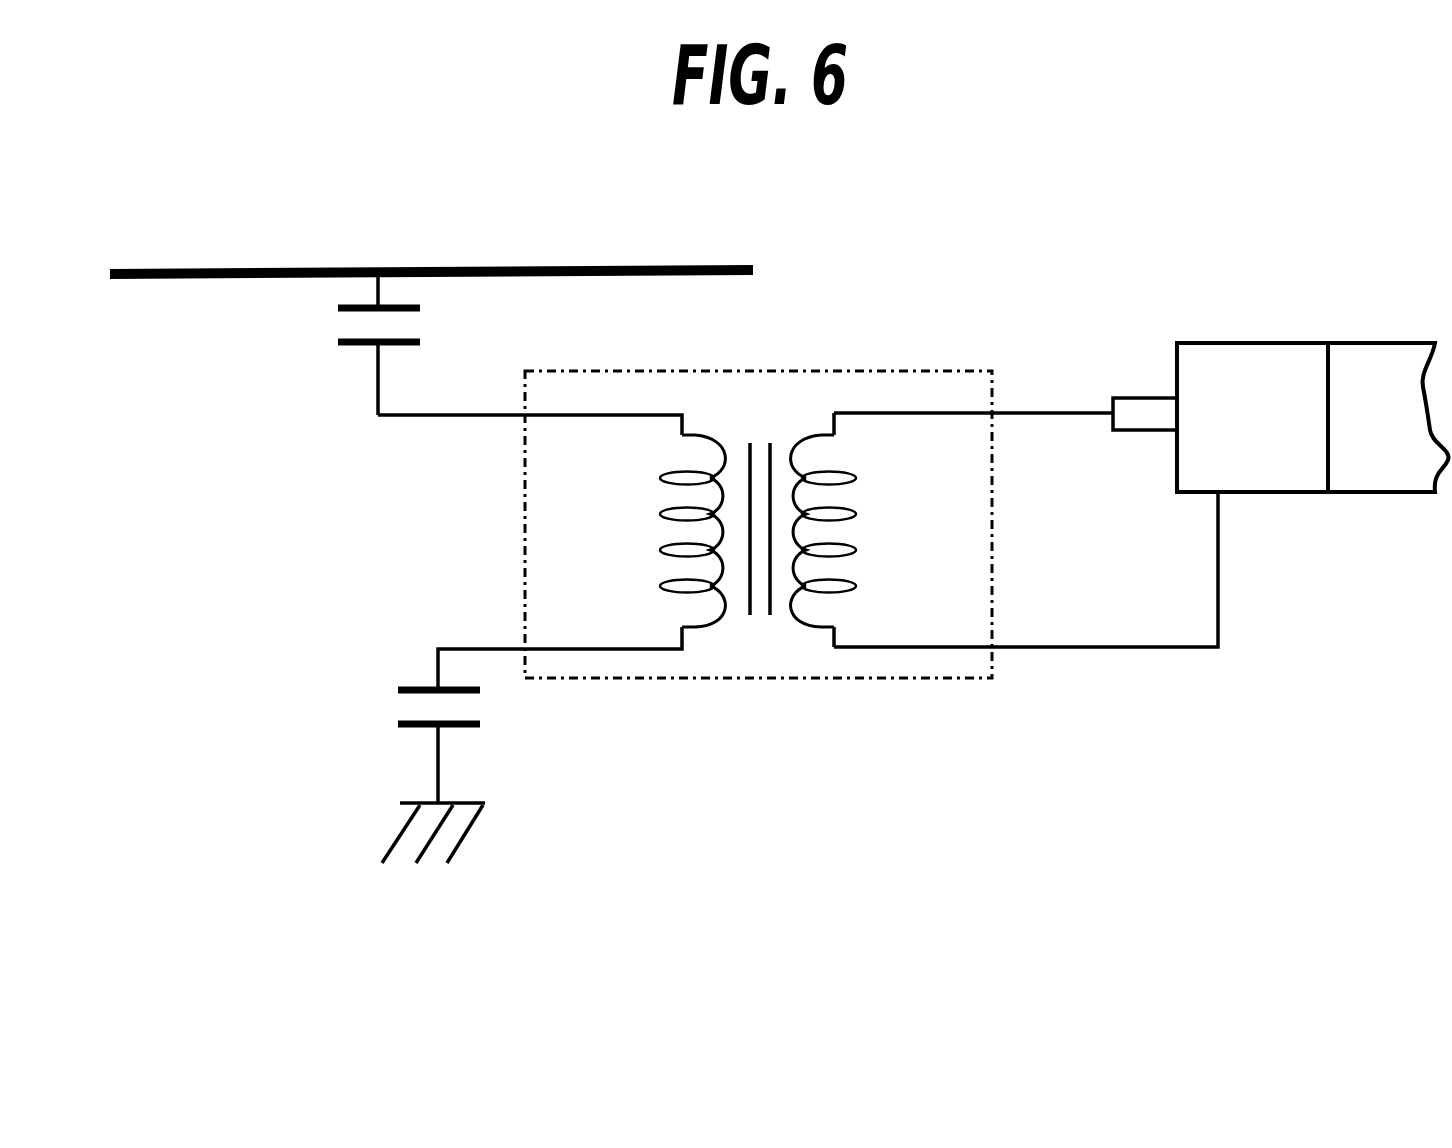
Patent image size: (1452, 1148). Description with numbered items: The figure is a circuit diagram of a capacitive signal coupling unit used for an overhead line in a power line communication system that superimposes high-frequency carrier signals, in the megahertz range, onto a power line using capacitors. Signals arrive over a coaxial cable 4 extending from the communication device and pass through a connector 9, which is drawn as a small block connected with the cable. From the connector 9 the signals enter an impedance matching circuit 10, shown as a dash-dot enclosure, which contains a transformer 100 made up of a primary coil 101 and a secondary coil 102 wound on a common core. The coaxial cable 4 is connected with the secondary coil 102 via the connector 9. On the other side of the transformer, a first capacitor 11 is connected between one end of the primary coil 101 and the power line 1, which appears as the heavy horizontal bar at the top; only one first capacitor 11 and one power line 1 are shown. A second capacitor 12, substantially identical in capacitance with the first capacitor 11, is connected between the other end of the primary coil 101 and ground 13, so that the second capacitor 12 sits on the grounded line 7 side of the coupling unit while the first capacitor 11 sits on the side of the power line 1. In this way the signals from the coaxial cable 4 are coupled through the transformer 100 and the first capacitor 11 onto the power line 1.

The power line 1 is at (722, 275).
The first capacitor 11 is at (342, 326).
The second capacitor 12 is at (402, 706).
The grounded line 7 is at (440, 755).
The ground 13 is at (435, 862).
The impedance matching circuit 10 is at (953, 683).
The transformer 100 is at (767, 656).
The primary coil 101 is at (660, 514).
The secondary coil 102 is at (858, 512).
The connector 9 is at (1272, 492).
The coaxial cable 4 is at (1380, 492).